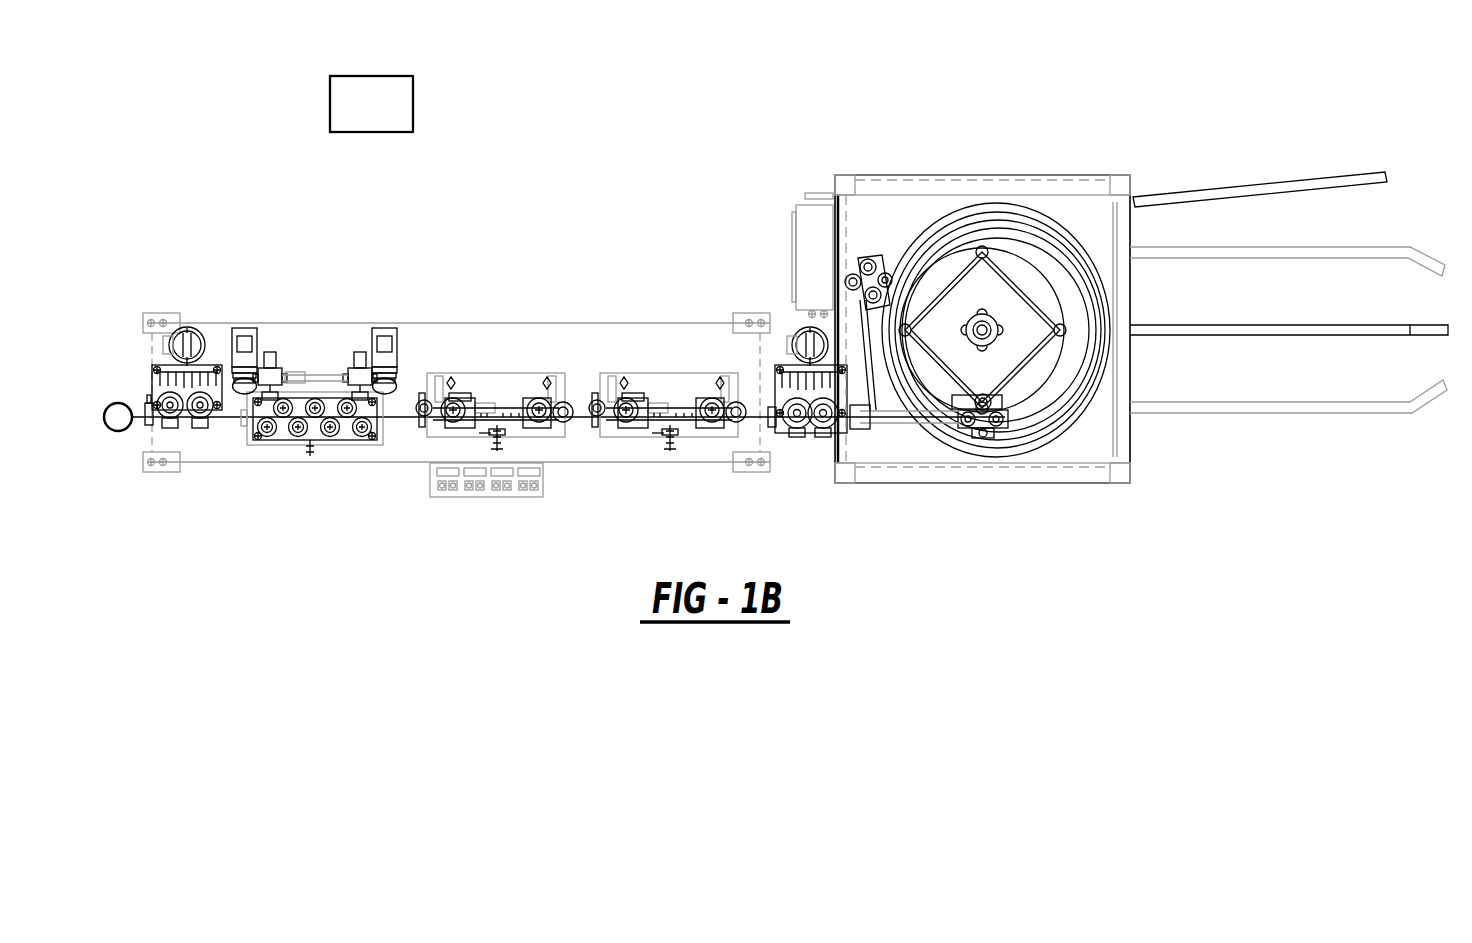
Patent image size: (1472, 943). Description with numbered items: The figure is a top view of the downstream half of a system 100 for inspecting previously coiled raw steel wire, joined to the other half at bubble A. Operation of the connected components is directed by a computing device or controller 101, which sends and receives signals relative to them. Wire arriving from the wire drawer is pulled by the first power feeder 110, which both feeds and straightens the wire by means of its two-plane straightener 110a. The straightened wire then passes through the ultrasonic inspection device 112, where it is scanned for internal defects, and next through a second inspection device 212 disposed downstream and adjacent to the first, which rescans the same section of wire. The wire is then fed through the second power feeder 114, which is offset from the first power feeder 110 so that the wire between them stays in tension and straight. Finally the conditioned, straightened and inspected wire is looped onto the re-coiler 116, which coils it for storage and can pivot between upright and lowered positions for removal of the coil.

The system 100 is at (216, 184).
The controller 101 is at (422, 262).
The first power feeder 110 is at (203, 376).
The two-plane straightener 110a is at (320, 406).
The ultrasonic inspection device 112 is at (500, 400).
The second inspection device 212 is at (675, 402).
The second power feeder 114 is at (808, 375).
The re-coiler 116 is at (1018, 143).